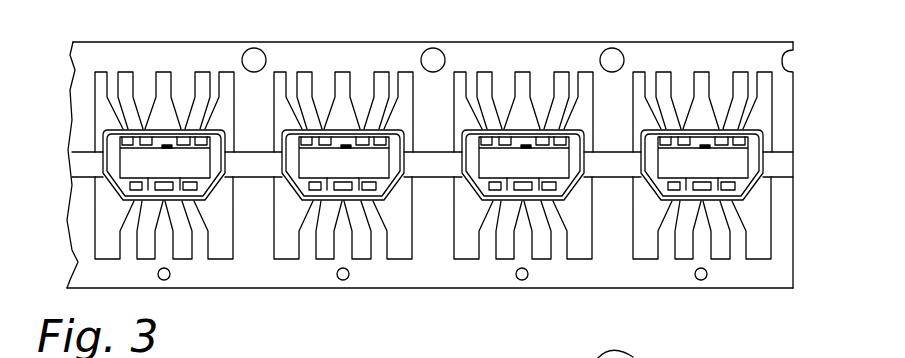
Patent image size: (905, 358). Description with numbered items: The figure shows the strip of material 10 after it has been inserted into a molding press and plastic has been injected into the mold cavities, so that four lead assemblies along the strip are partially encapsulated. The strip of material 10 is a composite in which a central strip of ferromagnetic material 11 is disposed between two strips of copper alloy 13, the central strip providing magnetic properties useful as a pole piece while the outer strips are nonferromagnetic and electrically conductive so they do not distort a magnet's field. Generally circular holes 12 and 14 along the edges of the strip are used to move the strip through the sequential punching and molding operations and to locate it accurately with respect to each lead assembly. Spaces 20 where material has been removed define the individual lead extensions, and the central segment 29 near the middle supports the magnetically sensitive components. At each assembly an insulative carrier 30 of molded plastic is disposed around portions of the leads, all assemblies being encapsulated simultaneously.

The strip of material 10 is at (287, 52).
The central strip of ferromagnetic material 11 is at (787, 163).
The circular hole 12 is at (438, 53).
The strip of copper alloy 13 is at (775, 48).
The circular hole 14 is at (345, 278).
The space where material has been removed 20 is at (96, 72).
The central segment 29 is at (127, 162).
The insulative carrier 30 is at (760, 137).